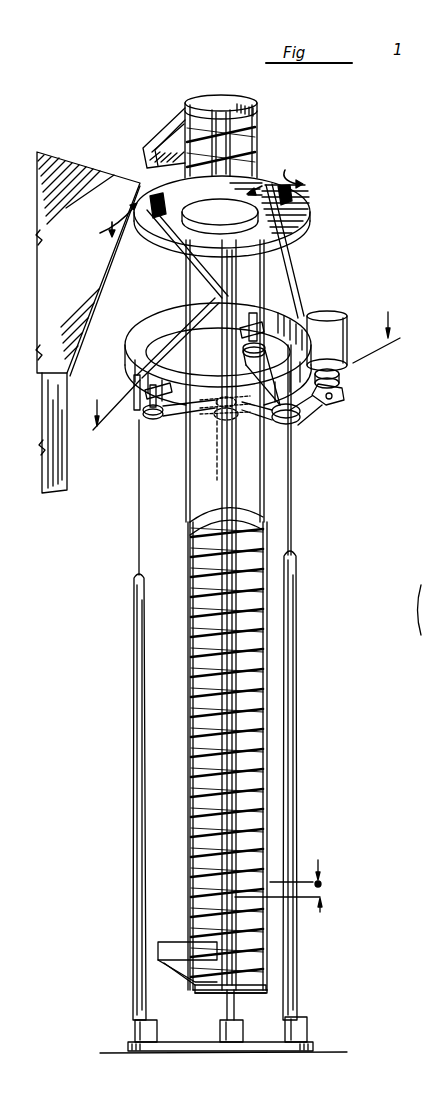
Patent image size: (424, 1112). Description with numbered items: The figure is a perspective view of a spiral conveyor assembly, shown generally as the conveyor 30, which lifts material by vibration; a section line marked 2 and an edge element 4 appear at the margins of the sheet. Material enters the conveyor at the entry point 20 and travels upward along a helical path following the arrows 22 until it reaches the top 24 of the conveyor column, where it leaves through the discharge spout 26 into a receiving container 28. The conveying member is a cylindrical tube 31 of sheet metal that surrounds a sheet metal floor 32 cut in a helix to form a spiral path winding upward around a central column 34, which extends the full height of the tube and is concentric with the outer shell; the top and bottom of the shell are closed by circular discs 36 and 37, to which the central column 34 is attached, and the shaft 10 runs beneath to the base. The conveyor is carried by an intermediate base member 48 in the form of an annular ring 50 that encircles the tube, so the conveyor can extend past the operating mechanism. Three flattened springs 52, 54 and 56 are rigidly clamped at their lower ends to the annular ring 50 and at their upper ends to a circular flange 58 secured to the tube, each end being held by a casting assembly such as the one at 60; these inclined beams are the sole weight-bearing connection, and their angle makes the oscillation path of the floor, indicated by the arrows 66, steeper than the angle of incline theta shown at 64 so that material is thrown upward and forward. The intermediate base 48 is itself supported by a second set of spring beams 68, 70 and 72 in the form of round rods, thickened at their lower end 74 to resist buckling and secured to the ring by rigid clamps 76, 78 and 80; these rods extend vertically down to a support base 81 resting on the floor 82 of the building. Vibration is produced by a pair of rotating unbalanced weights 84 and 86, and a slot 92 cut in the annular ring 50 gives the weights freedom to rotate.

The drive shaft 10 is at (240, 1000).
The material entry point 20 is at (186, 942).
The arrows 22 is at (205, 968).
The top of the conveyor column 24 is at (248, 117).
The discharge spout 26 is at (165, 130).
The receiving container 28 is at (68, 158).
The conveyor 30 is at (276, 772).
The cylindrical tube 31 is at (190, 766).
The sheet metal floor 32 is at (210, 816).
The central column 34 is at (210, 655).
The circular disc 36 is at (225, 95).
The circular disc 37 is at (212, 992).
The intermediate base member 48 is at (300, 325).
The annular ring 50 is at (160, 320).
The flattened spring 52 is at (188, 264).
The flattened spring 54 is at (290, 262).
The flattened spring 56 is at (150, 352).
The circular flange 58 is at (300, 211).
The casting assembly 60 is at (147, 205).
The angle theta 64 is at (325, 882).
The arrows 66 is at (100, 233).
The spring beam 68 is at (296, 483).
The spring beam 70 is at (218, 475).
The spring beam 72 is at (136, 547).
The lower end 74 is at (294, 570).
The rigid clamp 76 is at (256, 322).
The rigid clamp 78 is at (200, 430).
The rigid clamp 80 is at (137, 398).
The floor 82 is at (330, 1048).
The support base 81 is at (130, 1046).
The rotating unbalanced weight 84 is at (147, 403).
The rotating unbalanced weight 86 is at (246, 330).
The slot 92 is at (415, 534).
The adjacent figure element 4 is at (420, 671).
The section line 2 is at (244, 361).